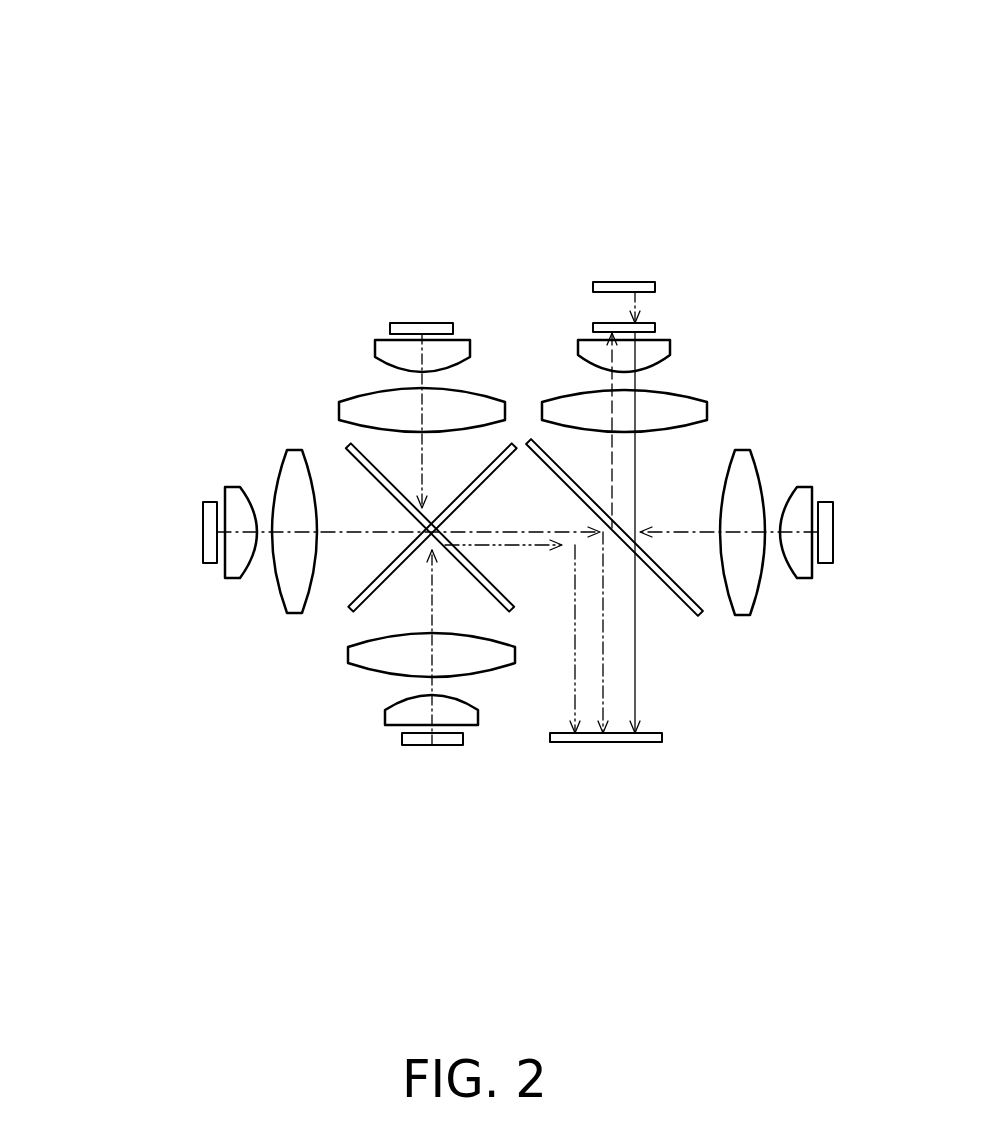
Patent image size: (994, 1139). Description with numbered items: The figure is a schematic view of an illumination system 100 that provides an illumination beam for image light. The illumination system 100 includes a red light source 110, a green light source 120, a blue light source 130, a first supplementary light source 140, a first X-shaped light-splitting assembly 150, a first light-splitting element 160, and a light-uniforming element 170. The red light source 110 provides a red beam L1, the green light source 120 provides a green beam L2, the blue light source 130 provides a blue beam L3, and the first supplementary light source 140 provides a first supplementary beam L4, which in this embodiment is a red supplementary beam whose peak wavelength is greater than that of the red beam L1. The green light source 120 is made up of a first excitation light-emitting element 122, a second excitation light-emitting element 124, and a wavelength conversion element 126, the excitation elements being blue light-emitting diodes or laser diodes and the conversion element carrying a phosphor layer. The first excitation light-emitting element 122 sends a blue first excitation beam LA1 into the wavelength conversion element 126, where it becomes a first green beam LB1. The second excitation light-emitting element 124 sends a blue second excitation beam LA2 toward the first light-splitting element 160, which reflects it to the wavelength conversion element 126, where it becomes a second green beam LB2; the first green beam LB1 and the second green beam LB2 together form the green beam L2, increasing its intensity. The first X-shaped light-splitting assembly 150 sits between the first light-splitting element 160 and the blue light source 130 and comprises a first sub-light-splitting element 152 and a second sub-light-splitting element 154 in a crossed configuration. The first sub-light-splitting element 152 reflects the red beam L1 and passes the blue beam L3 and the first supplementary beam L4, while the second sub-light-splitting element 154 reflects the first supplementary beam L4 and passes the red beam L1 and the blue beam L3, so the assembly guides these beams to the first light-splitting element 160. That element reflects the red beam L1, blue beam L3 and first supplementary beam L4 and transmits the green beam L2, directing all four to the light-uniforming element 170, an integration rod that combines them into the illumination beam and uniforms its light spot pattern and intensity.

The illumination system 100 is at (868, 957).
The red light source 110 is at (433, 322).
The green light source 120 is at (100, 12).
The first excitation light-emitting element 122 is at (612, 282).
The second excitation light-emitting element 124 is at (863, 515).
The wavelength conversion element 126 is at (725, 313).
The blue light source 130 is at (203, 518).
The first supplementary light source 140 is at (443, 745).
The first X-shaped light-splitting assembly 150 is at (383, 12).
The first sub-light-splitting element 152 is at (345, 445).
The second sub-light-splitting element 154 is at (282, 685).
The first light-splitting element 160 is at (685, 608).
The light-uniforming element 170 is at (652, 742).
The red beam L1 is at (422, 378).
The green beam L2 is at (248, 12).
The blue beam L3 is at (262, 533).
The first supplementary beam L4 is at (428, 686).
The first excitation beam LA1 is at (633, 296).
The second excitation beam LA2 is at (768, 533).
The first green beam LB1 is at (460, 188).
The second green beam LB2 is at (755, 418).